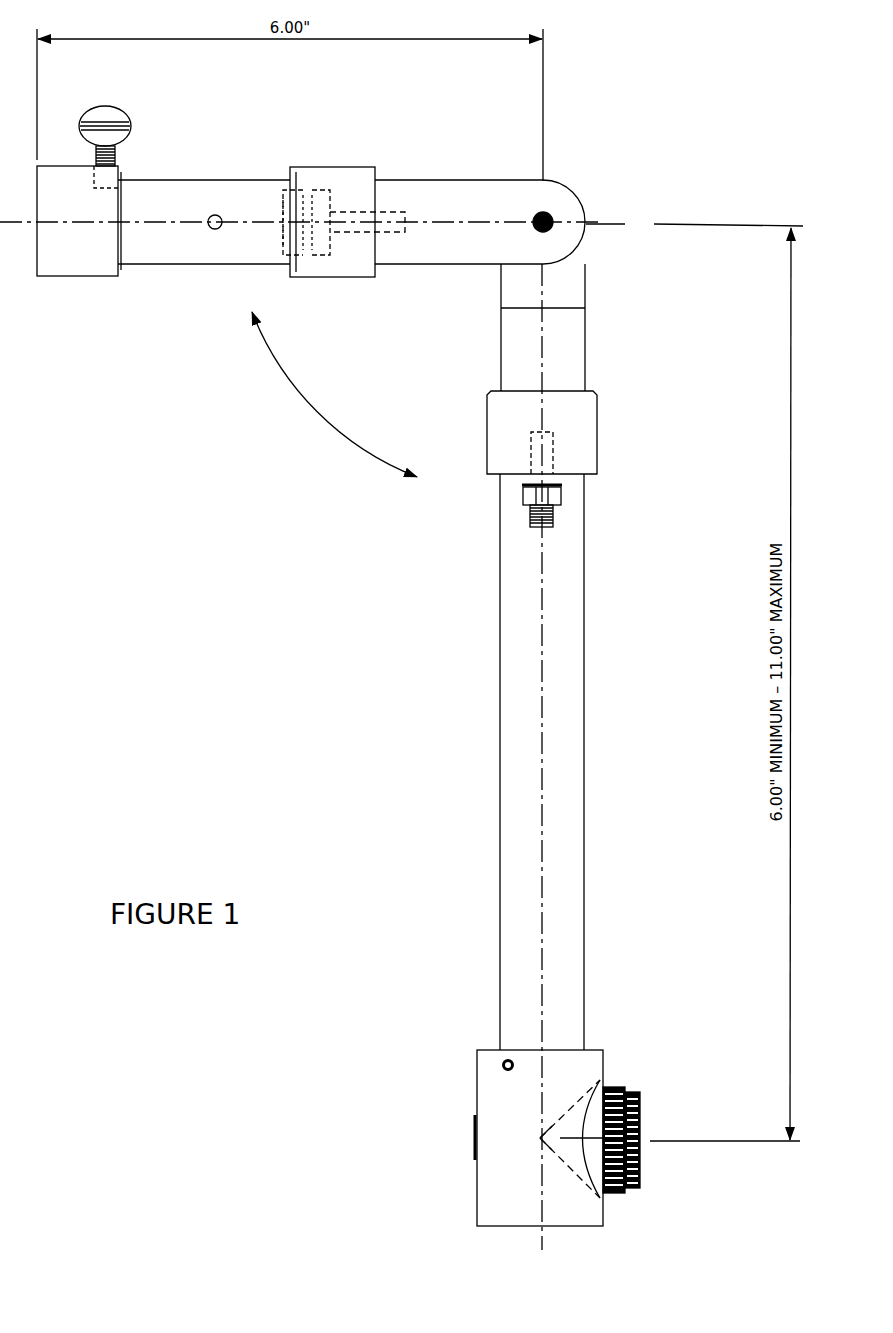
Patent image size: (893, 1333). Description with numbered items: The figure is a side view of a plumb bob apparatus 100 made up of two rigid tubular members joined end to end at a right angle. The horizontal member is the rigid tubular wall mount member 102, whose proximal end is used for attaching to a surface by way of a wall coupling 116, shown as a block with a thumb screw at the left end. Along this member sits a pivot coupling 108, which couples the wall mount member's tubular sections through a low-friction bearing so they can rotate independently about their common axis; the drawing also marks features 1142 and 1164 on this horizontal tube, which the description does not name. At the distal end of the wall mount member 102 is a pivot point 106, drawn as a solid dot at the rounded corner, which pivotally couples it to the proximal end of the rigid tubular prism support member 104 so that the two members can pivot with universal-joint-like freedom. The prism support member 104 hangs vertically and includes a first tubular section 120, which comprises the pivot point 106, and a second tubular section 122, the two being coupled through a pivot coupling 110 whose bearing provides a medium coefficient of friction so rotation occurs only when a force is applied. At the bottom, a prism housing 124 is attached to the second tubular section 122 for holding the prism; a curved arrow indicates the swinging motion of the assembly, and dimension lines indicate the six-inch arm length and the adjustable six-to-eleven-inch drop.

The plumb bob apparatus 100 is at (140, 645).
The wall mount member 102 is at (176, 284).
The prism support member 104 is at (612, 618).
The pivot point 106 is at (556, 216).
The pivot coupling 108 is at (348, 172).
The pivot coupling 110 is at (588, 440).
The wall coupling 116 is at (78, 262).
The first tubular section 120 is at (585, 352).
The second tubular section 122 is at (570, 758).
The prism housing 124 is at (484, 1100).
The hole 1142 is at (222, 183).
The arm tube section 1164 is at (458, 195).